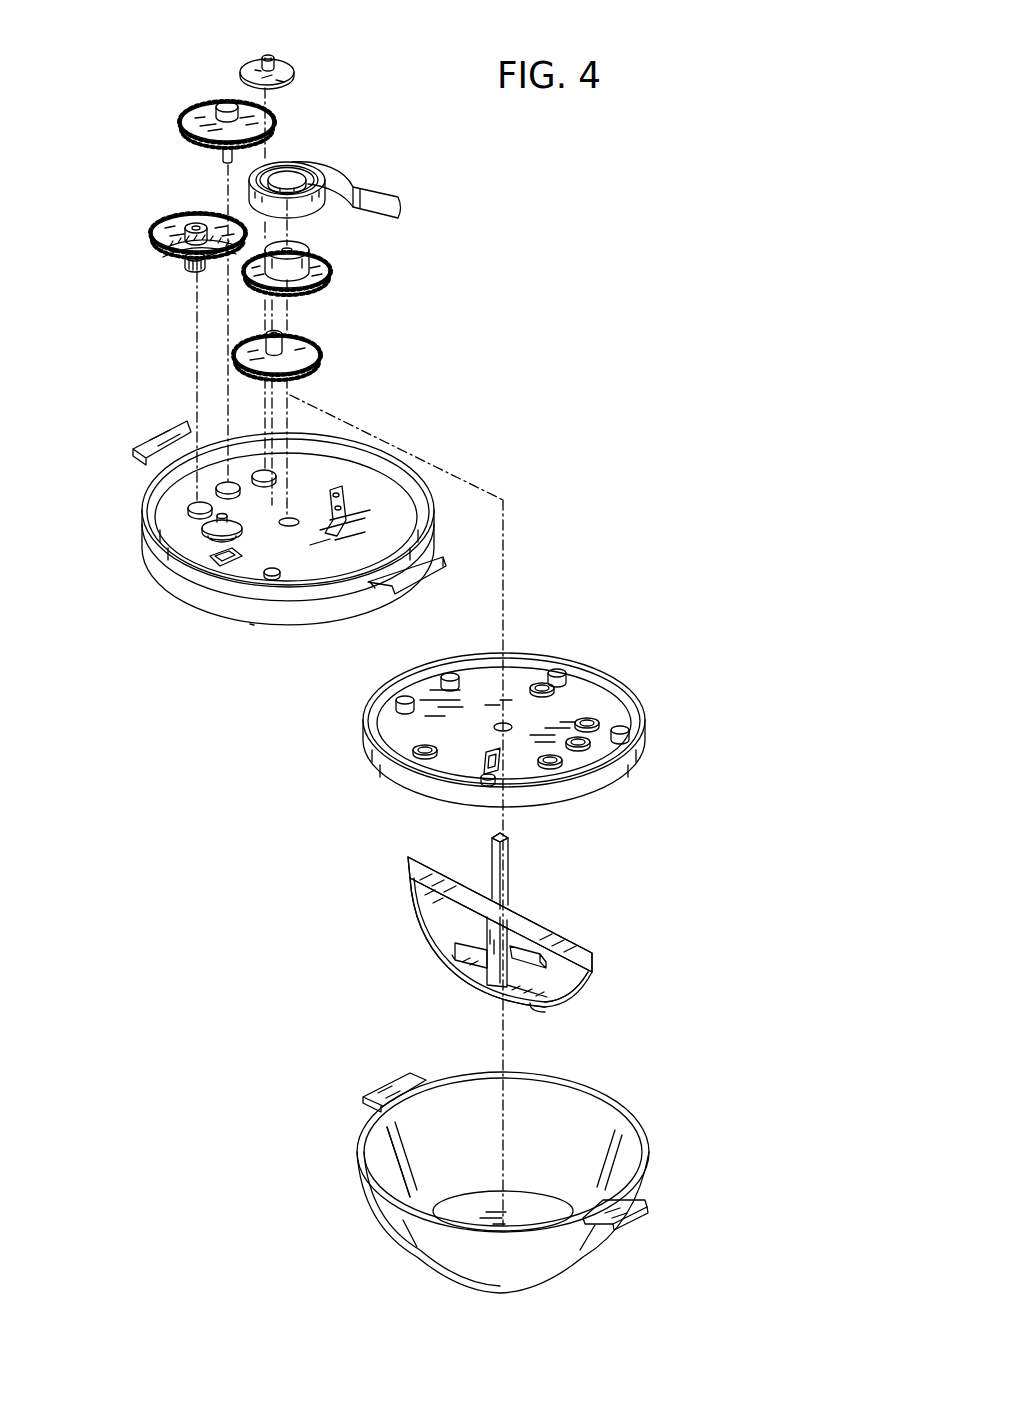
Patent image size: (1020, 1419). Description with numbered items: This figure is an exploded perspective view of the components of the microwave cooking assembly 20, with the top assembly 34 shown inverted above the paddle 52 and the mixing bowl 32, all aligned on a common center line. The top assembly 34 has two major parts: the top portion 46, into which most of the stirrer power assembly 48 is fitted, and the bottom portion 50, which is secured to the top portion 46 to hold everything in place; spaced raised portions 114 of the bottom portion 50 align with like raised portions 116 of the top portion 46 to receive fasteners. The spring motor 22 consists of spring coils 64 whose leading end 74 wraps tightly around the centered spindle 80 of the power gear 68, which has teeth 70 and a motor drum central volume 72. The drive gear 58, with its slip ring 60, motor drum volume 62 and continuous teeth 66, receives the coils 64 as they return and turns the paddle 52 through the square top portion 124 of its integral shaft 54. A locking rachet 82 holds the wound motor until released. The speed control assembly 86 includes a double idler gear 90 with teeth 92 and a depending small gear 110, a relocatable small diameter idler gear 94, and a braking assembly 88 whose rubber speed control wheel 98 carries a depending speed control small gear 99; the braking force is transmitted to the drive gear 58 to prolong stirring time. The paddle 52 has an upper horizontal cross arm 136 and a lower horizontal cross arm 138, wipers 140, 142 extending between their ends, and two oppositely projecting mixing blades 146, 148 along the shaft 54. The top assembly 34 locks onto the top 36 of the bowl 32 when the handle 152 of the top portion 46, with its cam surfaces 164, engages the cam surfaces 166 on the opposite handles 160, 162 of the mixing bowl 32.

The microwave cooking assembly 20 is at (287, 628).
The spring motor 22 is at (292, 160).
The mixing bowl 32 is at (357, 1158).
The top assembly 34 is at (165, 590).
The top of the bowl 36 is at (630, 1115).
The top portion 46 is at (428, 517).
The stirrer power assembly 48 is at (165, 222).
The bottom portion 50 is at (648, 720).
The paddle 52 is at (600, 968).
The integral shaft 54 is at (512, 855).
The drive gear 58 is at (331, 262).
The slip ring 60 is at (321, 250).
The motor drum volume 62 is at (321, 280).
The spring coils 64 is at (318, 163).
The teeth 66 is at (306, 290).
The power gear 68 is at (157, 250).
The teeth 70 is at (163, 262).
The motor drum central volume 72 is at (165, 238).
The leading end 74 is at (402, 200).
The centered spindle 80 is at (283, 333).
The locking rachet 82 is at (352, 496).
The speed control assembly 86 is at (190, 93).
The braking assembly 88 is at (297, 70).
The double idler gear 90 is at (183, 138).
The teeth 92 is at (207, 147).
The small diameter idler gear 94 is at (200, 535).
The speed control wheel 98 is at (283, 85).
The speed control small gear 99 is at (276, 76).
The depending small gear 110 is at (192, 268).
The raised portions 114 is at (565, 672).
The raised portions 116 is at (270, 577).
The top portion of shaft 124 is at (490, 843).
The upper horizontal cross arm 136 is at (566, 935).
The lower horizontal cross arm 138 is at (530, 1003).
The wiper 140 is at (580, 985).
The wiper 142 is at (412, 908).
The upper mixing blade 146 is at (535, 930).
The lower mixing blade 148 is at (470, 950).
The handle 152 is at (141, 462).
The handle 160 is at (412, 1075).
The handle 162 is at (640, 1195).
The cam surfaces 164 is at (368, 582).
The cam surfaces 166 is at (650, 1212).